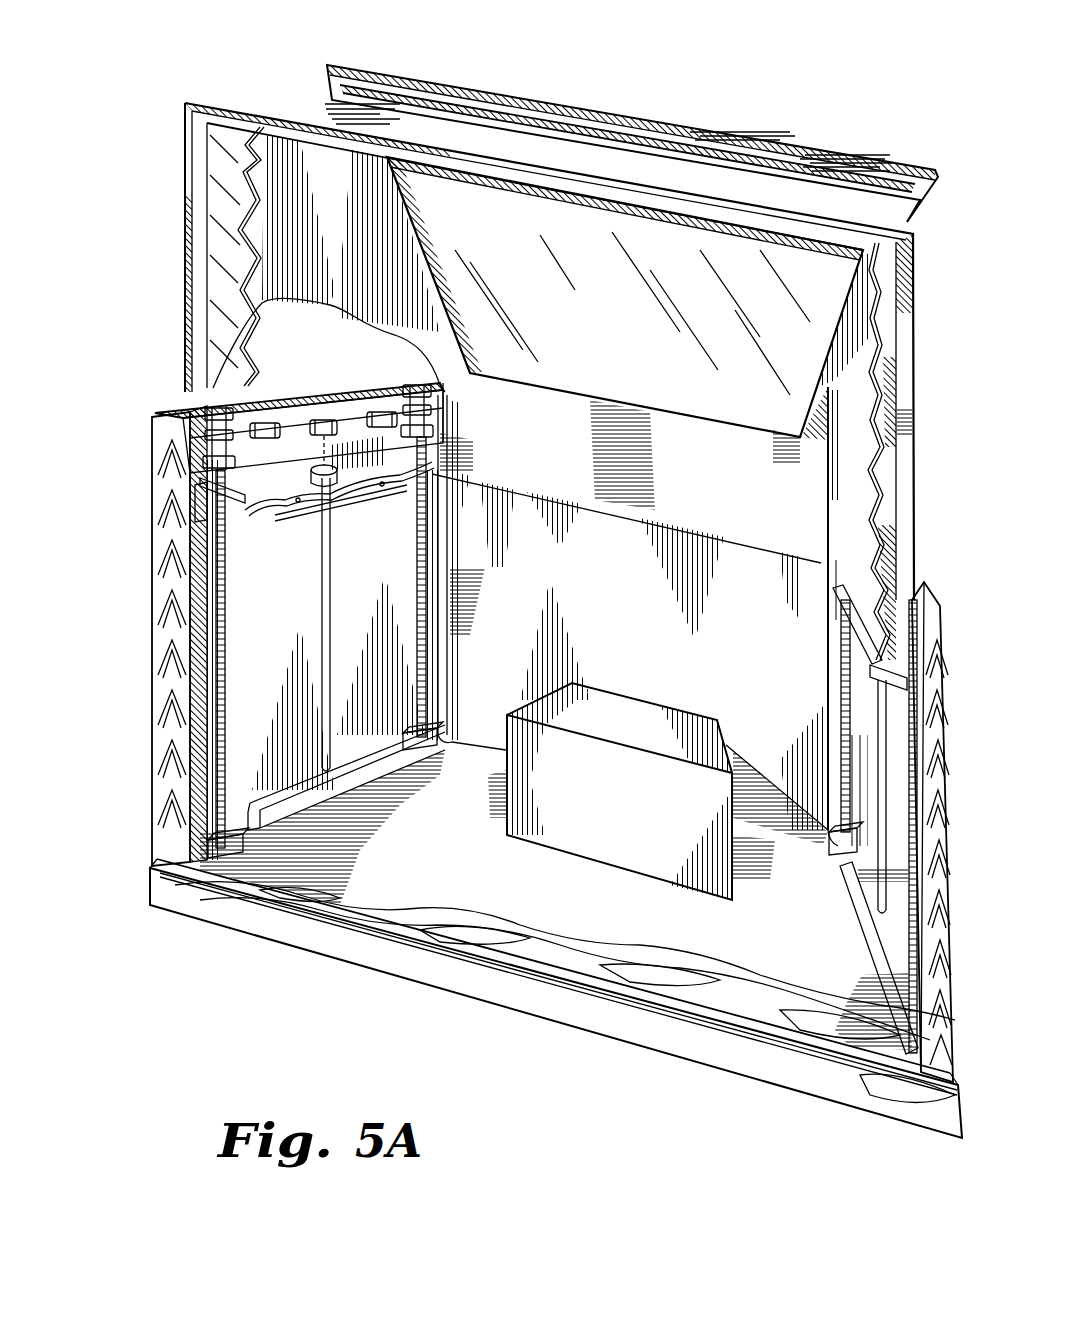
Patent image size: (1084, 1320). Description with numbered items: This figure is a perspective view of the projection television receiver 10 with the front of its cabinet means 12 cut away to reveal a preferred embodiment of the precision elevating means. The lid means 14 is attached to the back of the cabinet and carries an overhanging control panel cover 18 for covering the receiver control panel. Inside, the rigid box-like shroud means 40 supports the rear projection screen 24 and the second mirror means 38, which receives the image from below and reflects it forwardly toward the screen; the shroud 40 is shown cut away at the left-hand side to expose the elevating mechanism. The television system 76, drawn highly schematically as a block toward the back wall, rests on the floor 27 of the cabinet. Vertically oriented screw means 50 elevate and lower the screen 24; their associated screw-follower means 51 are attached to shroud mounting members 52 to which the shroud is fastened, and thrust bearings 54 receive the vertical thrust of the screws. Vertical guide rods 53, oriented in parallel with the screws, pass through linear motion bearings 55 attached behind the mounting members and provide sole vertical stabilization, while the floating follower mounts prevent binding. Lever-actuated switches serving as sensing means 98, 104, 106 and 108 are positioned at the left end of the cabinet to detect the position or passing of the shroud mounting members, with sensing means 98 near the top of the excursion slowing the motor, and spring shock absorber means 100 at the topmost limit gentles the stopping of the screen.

The projection television receiver 10 is at (163, 290).
The cabinet means 12 is at (945, 677).
The lid means 14 is at (411, 64).
The control panel cover 18 is at (645, 140).
The rear projection screen 24 is at (883, 462).
The floor 27 is at (500, 940).
The second mirror means 38 is at (582, 306).
The shroud means 40 is at (185, 137).
The screw means 50 is at (228, 623).
The screw-follower means 51 is at (248, 505).
The shroud mounting members 52 is at (243, 497).
The guide rods 53 is at (322, 668).
The thrust bearings 54 is at (207, 838).
The linear motion bearings 55 is at (336, 488).
The television system 76 is at (602, 814).
The sensing means 98 is at (196, 496).
The spring shock absorber means 100 is at (200, 440).
The sensing means 104 is at (262, 425).
The sensing means 106 is at (318, 428).
The sensing means 108 is at (385, 420).